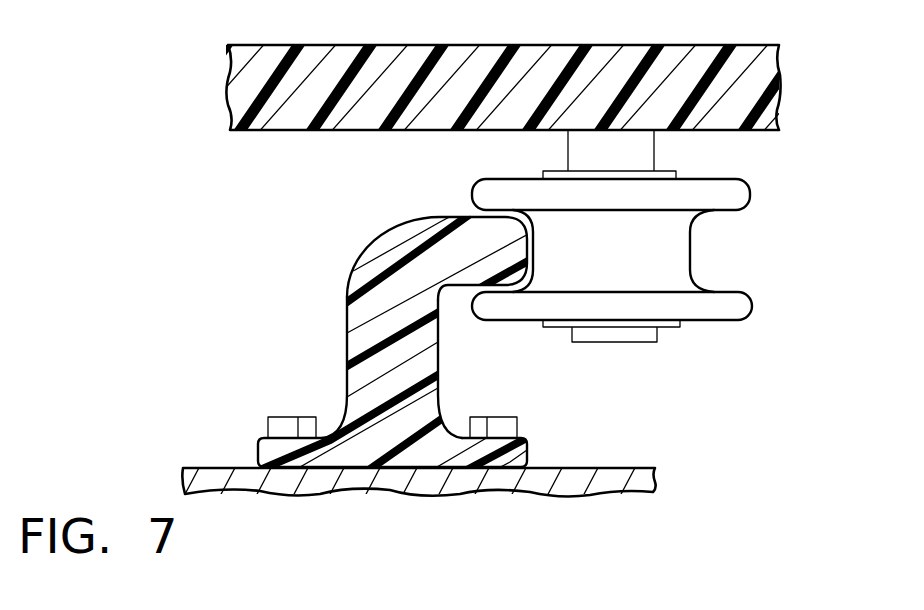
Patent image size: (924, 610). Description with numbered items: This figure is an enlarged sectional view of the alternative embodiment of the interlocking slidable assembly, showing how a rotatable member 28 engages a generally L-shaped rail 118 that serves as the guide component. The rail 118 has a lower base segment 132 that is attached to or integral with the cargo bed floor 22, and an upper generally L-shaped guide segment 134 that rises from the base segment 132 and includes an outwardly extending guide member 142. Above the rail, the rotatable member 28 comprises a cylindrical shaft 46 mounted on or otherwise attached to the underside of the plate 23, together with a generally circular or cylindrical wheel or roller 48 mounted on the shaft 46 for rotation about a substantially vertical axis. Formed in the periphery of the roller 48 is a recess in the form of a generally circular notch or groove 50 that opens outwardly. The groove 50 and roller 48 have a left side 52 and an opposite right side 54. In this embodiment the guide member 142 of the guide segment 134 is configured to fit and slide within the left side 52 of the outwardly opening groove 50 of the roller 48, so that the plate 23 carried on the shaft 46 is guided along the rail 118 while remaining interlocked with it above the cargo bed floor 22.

The plate 23 is at (565, 57).
The cylindrical shaft 46 is at (637, 153).
The groove 50 is at (665, 245).
The right side of groove 54 is at (665, 279).
The roller 48 is at (697, 308).
The rotatable member 28 is at (682, 371).
The cargo bed floor 22 is at (578, 467).
The left side of groove 52 is at (441, 233).
The L-shaped guide segment 134 is at (347, 345).
The guide member 142 is at (468, 257).
The lower base segment 132 is at (340, 447).
The L-shaped rail 118 is at (332, 349).